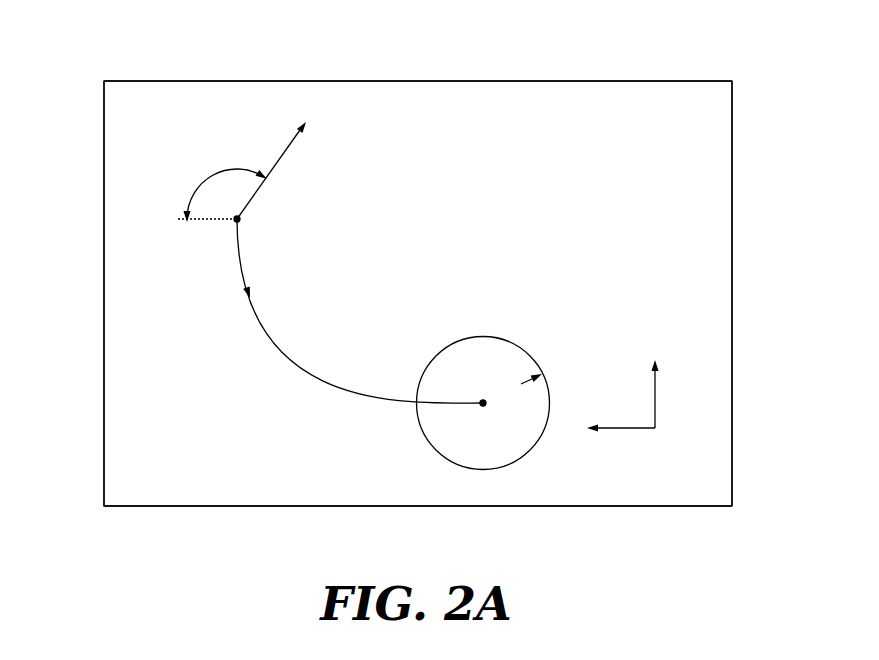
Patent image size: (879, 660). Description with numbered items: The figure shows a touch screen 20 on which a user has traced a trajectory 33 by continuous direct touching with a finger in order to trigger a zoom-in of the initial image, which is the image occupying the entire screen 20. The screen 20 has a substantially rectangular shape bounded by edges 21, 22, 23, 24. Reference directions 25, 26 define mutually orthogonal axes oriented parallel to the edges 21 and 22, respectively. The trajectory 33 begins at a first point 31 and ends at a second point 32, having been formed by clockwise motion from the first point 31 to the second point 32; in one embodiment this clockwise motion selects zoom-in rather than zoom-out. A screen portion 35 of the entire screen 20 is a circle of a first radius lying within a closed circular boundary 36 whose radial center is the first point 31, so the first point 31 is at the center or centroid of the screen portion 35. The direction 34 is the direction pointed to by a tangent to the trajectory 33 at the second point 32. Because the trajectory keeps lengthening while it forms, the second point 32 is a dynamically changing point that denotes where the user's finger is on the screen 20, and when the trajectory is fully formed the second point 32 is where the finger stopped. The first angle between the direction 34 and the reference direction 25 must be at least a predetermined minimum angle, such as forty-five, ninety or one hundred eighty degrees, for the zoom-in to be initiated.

The touch screen 20 is at (606, 146).
The bounding edge 21 is at (197, 506).
The bounding edge 22 is at (104, 292).
The bounding edge 23 is at (418, 81).
The bounding edge 24 is at (732, 292).
The reference direction 25 is at (628, 428).
The reference direction 26 is at (657, 395).
The first point 31 is at (485, 406).
The second point 32 is at (240, 221).
The trajectory 33 is at (279, 349).
The direction 34 is at (290, 143).
The screen portion 35 is at (466, 374).
The closed circular boundary 36 is at (448, 347).